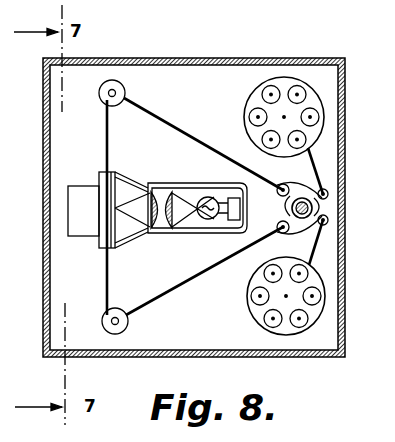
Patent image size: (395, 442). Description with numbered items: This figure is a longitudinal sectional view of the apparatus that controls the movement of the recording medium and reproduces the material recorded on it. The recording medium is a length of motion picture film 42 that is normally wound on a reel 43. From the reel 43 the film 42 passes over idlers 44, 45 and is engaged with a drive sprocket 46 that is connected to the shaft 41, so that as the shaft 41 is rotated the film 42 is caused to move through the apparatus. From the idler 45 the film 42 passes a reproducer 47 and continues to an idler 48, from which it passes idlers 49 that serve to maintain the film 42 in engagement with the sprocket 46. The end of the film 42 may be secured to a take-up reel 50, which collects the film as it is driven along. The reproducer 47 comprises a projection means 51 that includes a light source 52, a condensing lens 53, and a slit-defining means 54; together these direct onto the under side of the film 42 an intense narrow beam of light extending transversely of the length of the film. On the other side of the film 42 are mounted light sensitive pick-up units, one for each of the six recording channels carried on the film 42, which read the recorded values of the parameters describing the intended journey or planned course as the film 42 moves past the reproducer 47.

The shaft 41 is at (312, 207).
The motion picture film 42 is at (176, 126).
The reel 43 is at (258, 97).
The idler 44 is at (283, 184).
The idler 45 is at (125, 90).
The drive sprocket 46 is at (280, 232).
The reproducer 47 is at (100, 172).
The idler 48 is at (128, 325).
The idlers 49 is at (321, 226).
The take-up reel 50 is at (248, 300).
The projection means 51 is at (158, 192).
The light source 52 is at (218, 215).
The condensing lens 53 is at (161, 232).
The slit-defining means 54 is at (118, 240).